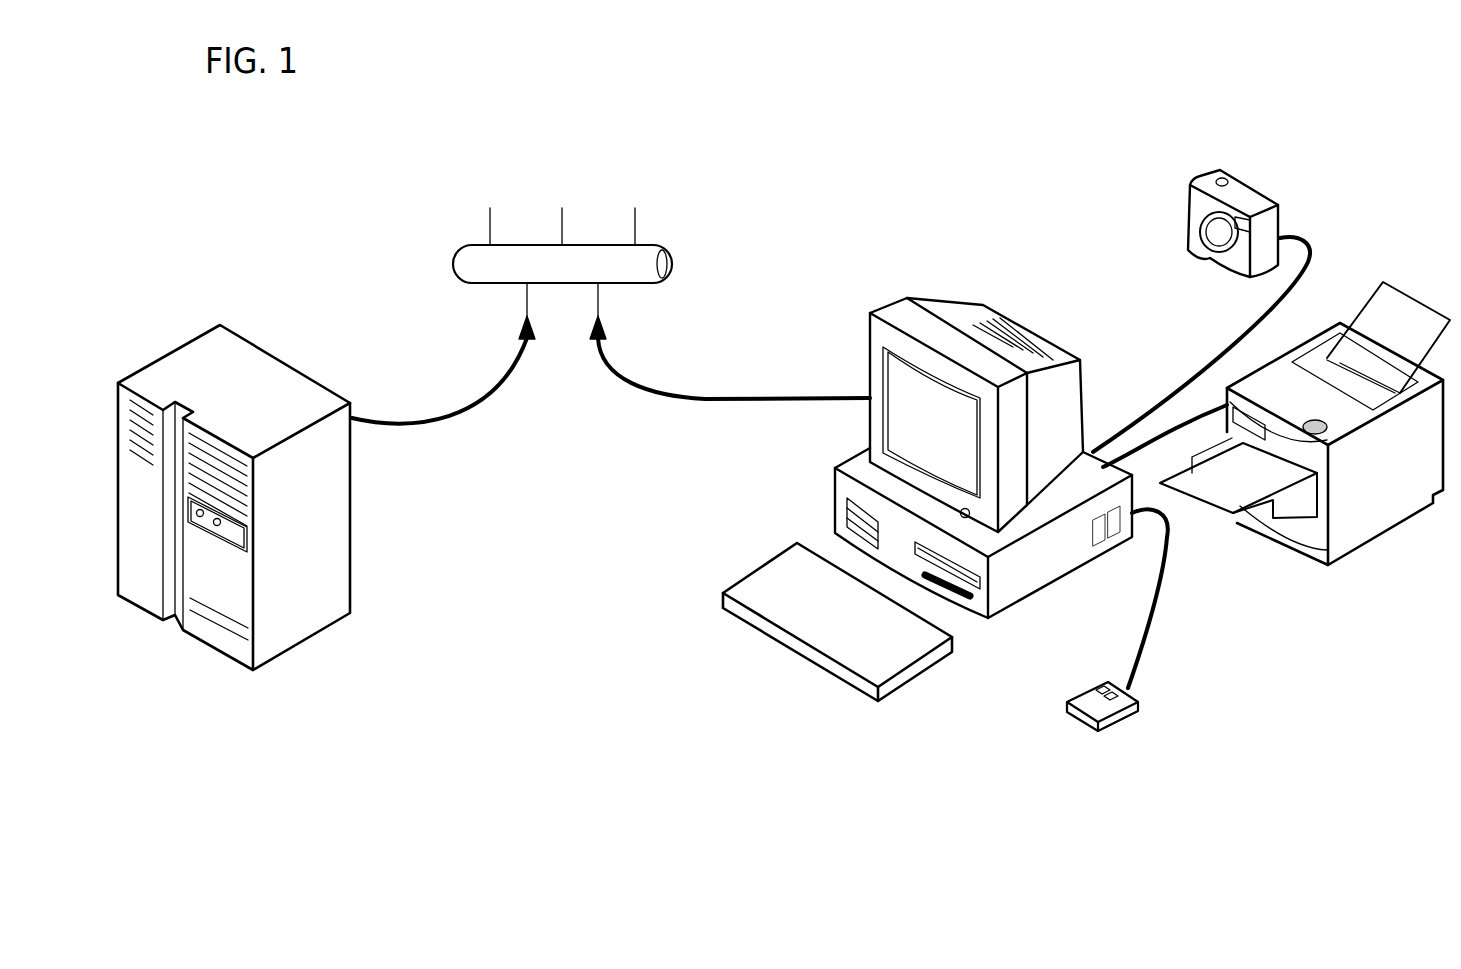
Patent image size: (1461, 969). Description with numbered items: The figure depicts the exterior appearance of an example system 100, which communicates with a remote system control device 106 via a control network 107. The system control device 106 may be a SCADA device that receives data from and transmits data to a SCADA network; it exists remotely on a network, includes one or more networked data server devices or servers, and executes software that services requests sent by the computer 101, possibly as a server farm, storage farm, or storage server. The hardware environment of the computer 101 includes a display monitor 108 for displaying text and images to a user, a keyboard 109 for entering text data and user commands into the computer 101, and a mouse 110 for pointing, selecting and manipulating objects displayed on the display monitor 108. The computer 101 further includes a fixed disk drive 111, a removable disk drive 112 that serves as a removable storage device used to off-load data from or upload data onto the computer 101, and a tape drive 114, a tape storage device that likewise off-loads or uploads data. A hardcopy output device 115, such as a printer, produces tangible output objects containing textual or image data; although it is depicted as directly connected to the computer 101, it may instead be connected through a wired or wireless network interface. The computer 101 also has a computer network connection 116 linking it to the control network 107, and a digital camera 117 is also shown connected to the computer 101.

The system 100 is at (305, 141).
The computer 101 is at (1040, 214).
The system control device 106 is at (305, 374).
The control network 107 is at (673, 264).
The display monitor 108 is at (868, 347).
The keyboard 109 is at (893, 690).
The mouse 110 is at (1130, 716).
The fixed disk drive 111 is at (850, 510).
The removable disk drive 112 is at (982, 578).
The tape drive 114 is at (972, 600).
The hardcopy output device 115 is at (1367, 542).
The computer network connection 116 is at (710, 397).
The digital camera 117 is at (1260, 192).